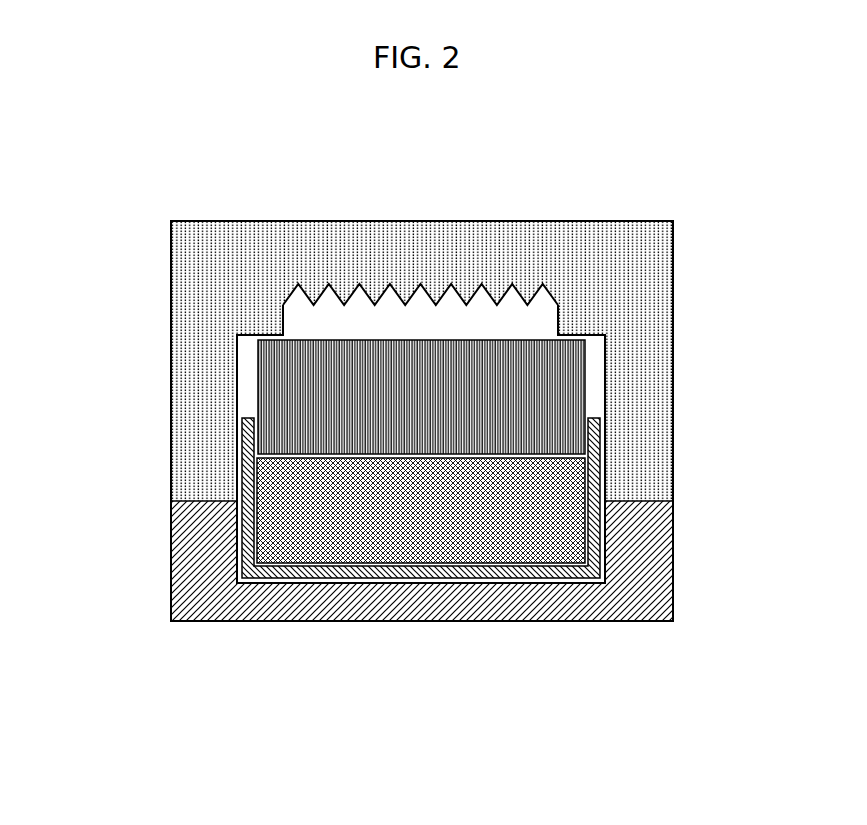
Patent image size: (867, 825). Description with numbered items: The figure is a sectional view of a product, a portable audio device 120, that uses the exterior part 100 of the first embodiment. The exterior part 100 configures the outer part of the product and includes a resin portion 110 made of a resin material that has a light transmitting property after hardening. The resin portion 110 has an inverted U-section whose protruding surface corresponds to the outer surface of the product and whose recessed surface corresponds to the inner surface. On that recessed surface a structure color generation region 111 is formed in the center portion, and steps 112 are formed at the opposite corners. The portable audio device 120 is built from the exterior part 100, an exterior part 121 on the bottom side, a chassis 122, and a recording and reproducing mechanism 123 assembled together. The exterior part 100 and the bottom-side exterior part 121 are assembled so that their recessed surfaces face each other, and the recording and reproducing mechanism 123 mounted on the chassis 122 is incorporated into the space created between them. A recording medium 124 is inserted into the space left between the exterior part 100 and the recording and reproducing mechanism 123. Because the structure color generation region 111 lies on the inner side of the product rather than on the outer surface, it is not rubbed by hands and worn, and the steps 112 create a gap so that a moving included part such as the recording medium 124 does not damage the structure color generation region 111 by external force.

The exterior part 100 is at (394, 403).
The resin portion 110 is at (513, 215).
The structure color generation region 111 is at (383, 288).
The steps 112 is at (260, 318).
The portable audio device 120 is at (407, 403).
The exterior part on a bottom side 121 is at (224, 596).
The chassis 122 is at (593, 440).
The recording and reproducing mechanism 123 is at (488, 512).
The recording medium 124 is at (552, 364).